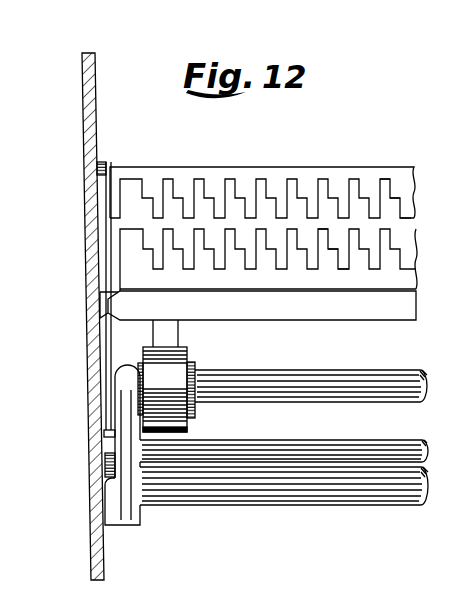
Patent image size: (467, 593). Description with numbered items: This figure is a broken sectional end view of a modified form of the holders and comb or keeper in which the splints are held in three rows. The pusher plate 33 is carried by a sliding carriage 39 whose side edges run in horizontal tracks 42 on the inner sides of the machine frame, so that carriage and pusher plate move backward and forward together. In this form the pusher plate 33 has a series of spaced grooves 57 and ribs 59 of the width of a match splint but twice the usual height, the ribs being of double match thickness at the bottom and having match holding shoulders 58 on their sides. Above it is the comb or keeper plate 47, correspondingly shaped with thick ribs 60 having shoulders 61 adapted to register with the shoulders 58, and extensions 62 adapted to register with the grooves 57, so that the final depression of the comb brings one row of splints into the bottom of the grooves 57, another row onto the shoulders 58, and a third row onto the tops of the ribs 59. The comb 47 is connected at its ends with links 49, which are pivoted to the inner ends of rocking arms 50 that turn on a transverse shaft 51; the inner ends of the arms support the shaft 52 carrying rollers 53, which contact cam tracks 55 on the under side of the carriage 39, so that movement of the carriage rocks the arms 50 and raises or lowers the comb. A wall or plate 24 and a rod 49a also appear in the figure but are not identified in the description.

The wall plate 24 is at (95, 114).
The comb or keeper plate 47 is at (318, 168).
The thick ribs 60 is at (396, 180).
The shoulders 61 is at (394, 194).
The extensions 62 is at (408, 208).
The pusher plate 33 is at (408, 275).
The ribs 59 is at (322, 230).
The match holding shoulders 58 is at (334, 249).
The spaced grooves 57 is at (349, 269).
The sliding carriage 39 is at (410, 304).
The links 49 is at (103, 263).
The horizontal tracks 42 is at (107, 318).
The cam tracks 55 is at (168, 337).
The rollers 53 is at (200, 373).
The rocking arms 50 is at (127, 492).
The shaft 52 is at (390, 372).
The rod 49a is at (397, 440).
The transverse shaft 51 is at (367, 503).